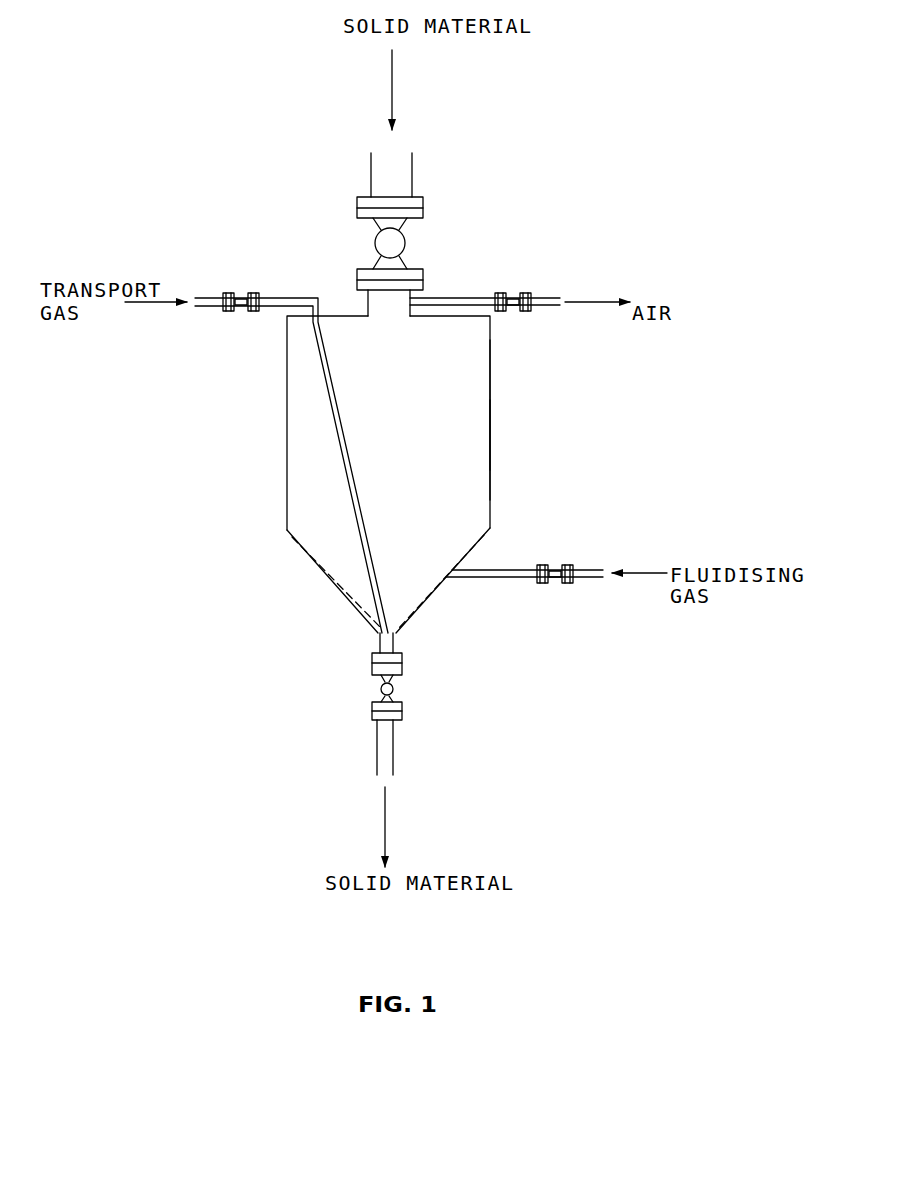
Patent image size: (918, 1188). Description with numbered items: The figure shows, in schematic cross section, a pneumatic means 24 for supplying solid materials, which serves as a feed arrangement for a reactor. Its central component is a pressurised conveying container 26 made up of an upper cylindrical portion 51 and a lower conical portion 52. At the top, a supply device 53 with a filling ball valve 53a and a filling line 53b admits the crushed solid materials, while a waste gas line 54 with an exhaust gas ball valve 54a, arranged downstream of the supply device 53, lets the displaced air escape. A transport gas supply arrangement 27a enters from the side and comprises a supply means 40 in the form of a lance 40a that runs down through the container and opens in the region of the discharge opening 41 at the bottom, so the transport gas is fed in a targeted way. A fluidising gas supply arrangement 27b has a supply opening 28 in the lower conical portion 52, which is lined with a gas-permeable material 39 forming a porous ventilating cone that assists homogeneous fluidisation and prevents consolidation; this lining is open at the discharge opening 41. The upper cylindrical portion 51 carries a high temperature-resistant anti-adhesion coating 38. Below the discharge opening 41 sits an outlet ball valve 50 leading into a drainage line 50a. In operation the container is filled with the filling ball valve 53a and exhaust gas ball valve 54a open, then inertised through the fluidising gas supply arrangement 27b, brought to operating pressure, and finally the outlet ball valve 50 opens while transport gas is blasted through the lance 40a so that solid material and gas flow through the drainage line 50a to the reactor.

The pneumatic means 24 is at (553, 230).
The pressurised conveying container 26 is at (490, 385).
The transport gas supply arrangement 27a is at (240, 297).
The fluidising gas supply arrangement 27b is at (553, 570).
The supply opening 28 is at (448, 575).
The anti-adhesion coating 38 is at (487, 427).
The gas-permeable material 39 is at (440, 577).
The supply means 40 is at (360, 531).
The lance 40a is at (441, 581).
The discharge opening 41 is at (393, 642).
The outlet ball valve 50 is at (380, 688).
The drainage line 50a is at (393, 757).
The upper cylindrical portion 51 is at (490, 427).
The lower conical portion 52 is at (340, 594).
The supply device 53 is at (407, 247).
The filling ball valve 53a is at (390, 243).
The filling line 53b is at (412, 180).
The waste gas line 54 is at (452, 297).
The exhaust gas ball valve 54a is at (512, 297).